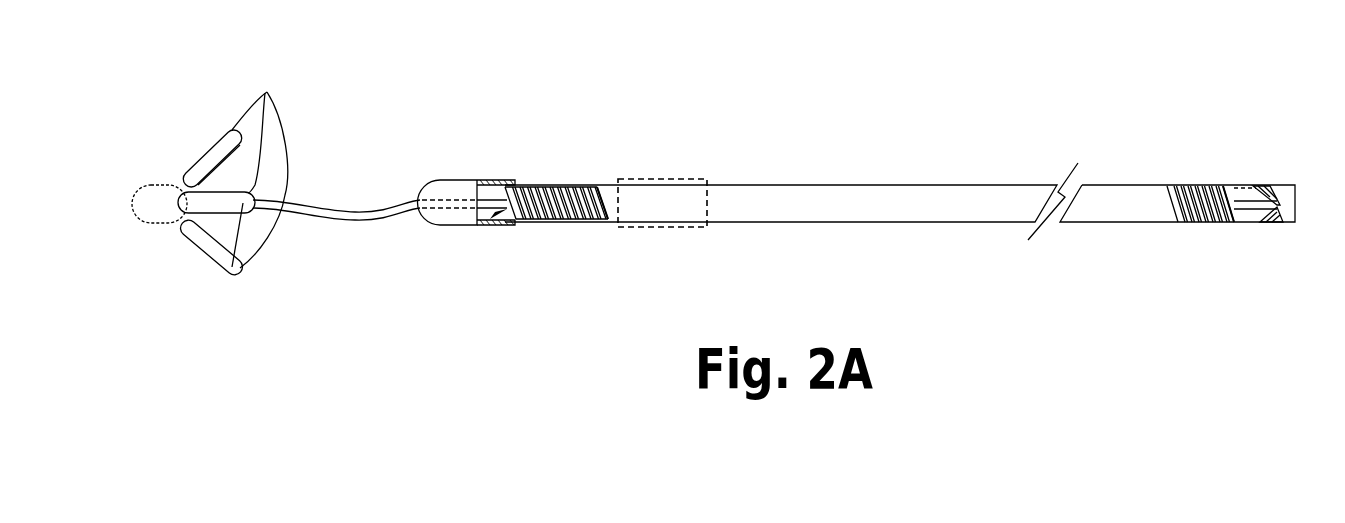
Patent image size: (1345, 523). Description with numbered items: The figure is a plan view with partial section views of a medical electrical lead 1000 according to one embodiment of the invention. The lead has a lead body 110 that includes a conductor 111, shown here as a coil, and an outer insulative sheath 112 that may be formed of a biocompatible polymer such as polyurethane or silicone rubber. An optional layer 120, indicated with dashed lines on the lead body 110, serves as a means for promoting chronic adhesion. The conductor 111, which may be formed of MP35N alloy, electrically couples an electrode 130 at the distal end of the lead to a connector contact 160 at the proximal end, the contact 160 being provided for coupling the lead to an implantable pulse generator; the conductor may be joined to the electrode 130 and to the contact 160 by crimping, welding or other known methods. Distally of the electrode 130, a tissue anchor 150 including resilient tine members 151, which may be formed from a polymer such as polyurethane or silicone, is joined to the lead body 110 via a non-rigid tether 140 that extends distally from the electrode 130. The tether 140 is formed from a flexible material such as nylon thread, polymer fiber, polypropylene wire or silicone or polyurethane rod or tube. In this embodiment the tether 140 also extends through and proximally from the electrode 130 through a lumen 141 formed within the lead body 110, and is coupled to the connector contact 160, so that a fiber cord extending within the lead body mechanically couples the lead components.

The medical electrical lead 1000 is at (847, 120).
The lead body 110 is at (727, 213).
The conductor 111 is at (552, 223).
The outer insulative sheath 112 is at (590, 223).
The optional layer 120 is at (630, 179).
The electrode 130 is at (443, 218).
The non-rigid tether 140 is at (300, 204).
The lumen 141 is at (483, 215).
The tissue anchor 150 is at (166, 246).
The resilient tine members 151 is at (267, 93).
The connector contact 160 is at (1265, 222).